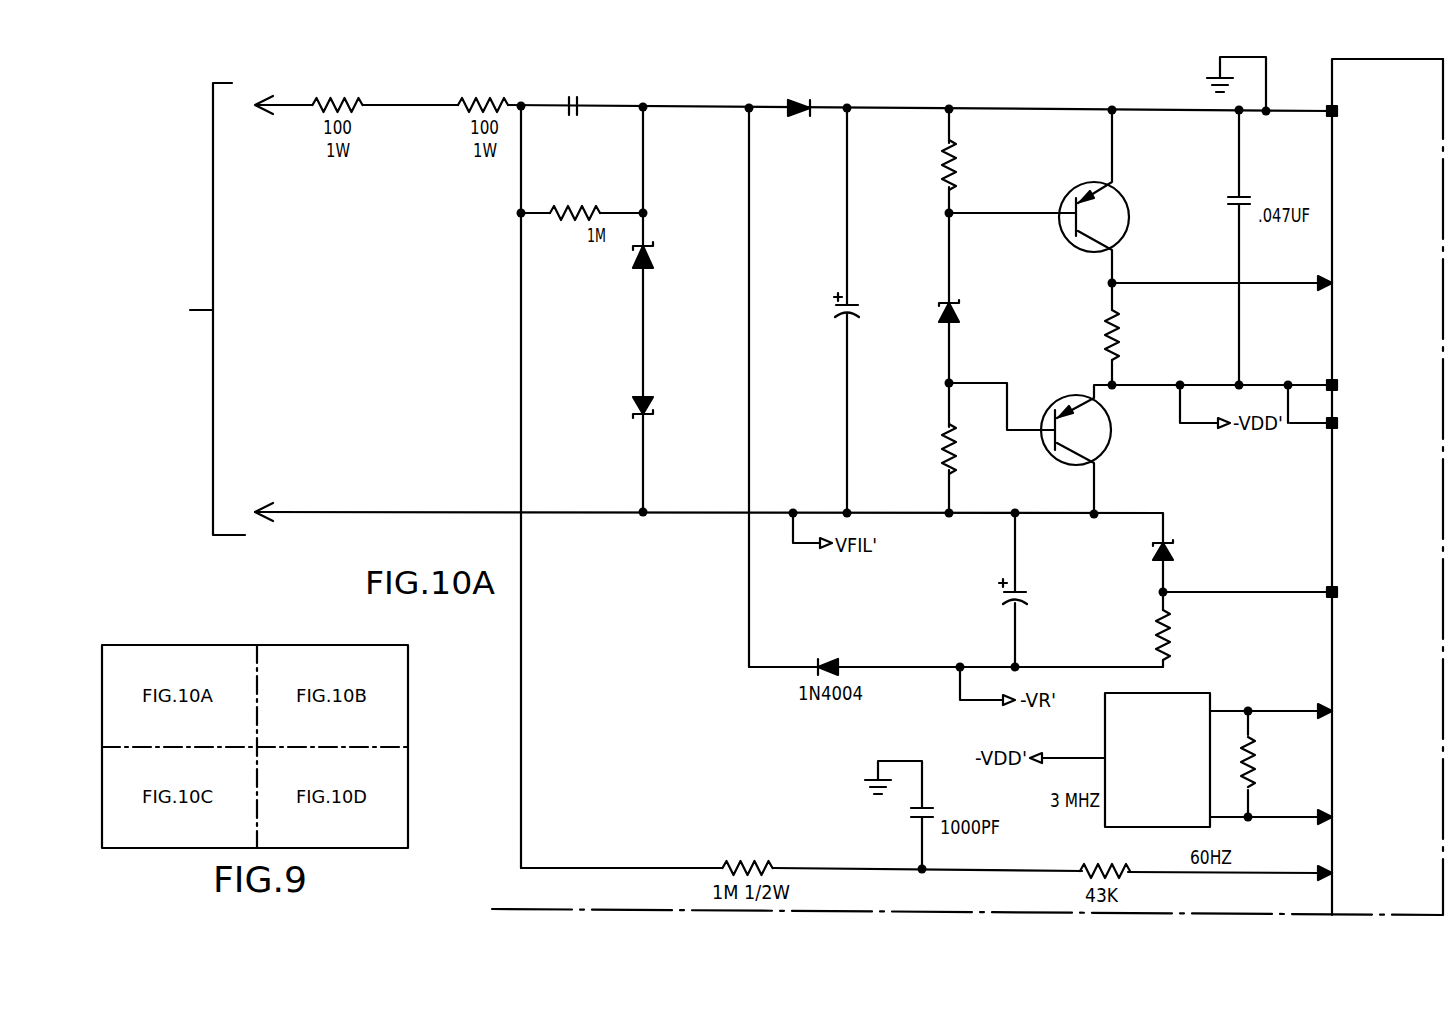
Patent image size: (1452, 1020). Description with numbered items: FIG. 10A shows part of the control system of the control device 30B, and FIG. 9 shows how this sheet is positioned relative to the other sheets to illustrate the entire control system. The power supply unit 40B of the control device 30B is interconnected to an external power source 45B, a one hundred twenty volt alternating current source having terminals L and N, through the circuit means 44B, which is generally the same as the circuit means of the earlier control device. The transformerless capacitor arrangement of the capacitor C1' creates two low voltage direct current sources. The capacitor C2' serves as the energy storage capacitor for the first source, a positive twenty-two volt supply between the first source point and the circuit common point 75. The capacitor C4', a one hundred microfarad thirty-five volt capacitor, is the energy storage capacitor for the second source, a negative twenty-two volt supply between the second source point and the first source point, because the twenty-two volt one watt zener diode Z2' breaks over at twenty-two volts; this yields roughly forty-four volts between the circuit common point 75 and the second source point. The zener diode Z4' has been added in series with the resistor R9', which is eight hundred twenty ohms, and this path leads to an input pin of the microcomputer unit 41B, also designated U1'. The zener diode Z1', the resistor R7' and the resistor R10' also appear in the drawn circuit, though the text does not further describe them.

The external power source 45B is at (203, 307).
The power supply unit 40B is at (725, 87).
The control device 30B is at (946, 89).
The circuit means 44B is at (993, 97).
The circuit common point 75 is at (1266, 82).
The microcomputer unit U1' is at (1385, 474).
The microcomputer unit 41B is at (1420, 48).
The capacitor C1' is at (572, 131).
The capacitor C2' is at (815, 310).
The capacitor C4' is at (1046, 590).
The zener diode Z1' is at (680, 270).
The zener diode Z2' is at (680, 418).
The zener diode Z4' is at (1201, 541).
The resistor R7' is at (1130, 334).
The resistor R9' is at (1182, 629).
The resistor R10' is at (1268, 764).